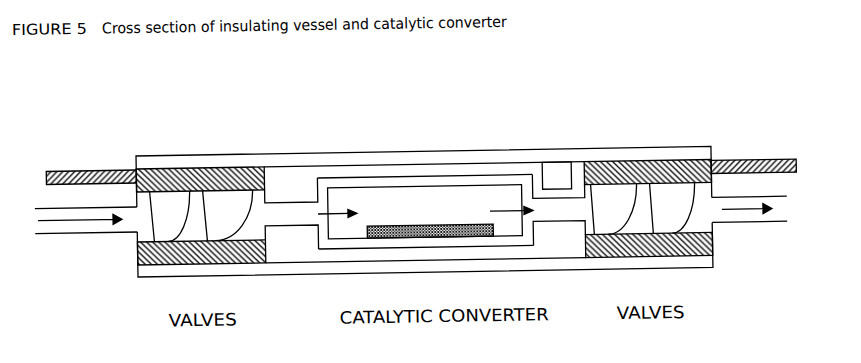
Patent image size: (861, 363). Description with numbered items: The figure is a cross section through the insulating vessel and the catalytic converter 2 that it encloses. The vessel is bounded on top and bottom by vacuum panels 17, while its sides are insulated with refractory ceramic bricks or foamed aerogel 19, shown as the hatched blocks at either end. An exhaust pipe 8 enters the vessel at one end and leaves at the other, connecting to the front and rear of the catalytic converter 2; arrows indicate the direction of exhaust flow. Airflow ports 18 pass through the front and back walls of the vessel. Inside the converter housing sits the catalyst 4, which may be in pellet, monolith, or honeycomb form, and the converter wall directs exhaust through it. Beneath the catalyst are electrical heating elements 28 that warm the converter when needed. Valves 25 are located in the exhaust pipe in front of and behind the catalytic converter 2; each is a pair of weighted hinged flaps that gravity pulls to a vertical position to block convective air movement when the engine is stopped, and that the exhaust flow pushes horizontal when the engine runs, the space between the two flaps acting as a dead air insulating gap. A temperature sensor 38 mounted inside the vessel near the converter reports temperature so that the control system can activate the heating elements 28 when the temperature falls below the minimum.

The vacuum panels 17 is at (277, 156).
The valves 25 is at (658, 233).
The refractory ceramic bricks or foamed aerogel 19 is at (634, 225).
The airflow ports 18 is at (722, 156).
The exhaust pipe 8 is at (748, 305).
The catalytic converter 2 is at (341, 181).
The catalyst 4 is at (405, 230).
The electrical heating elements 28 is at (479, 230).
The temperature sensors 38 is at (556, 175).